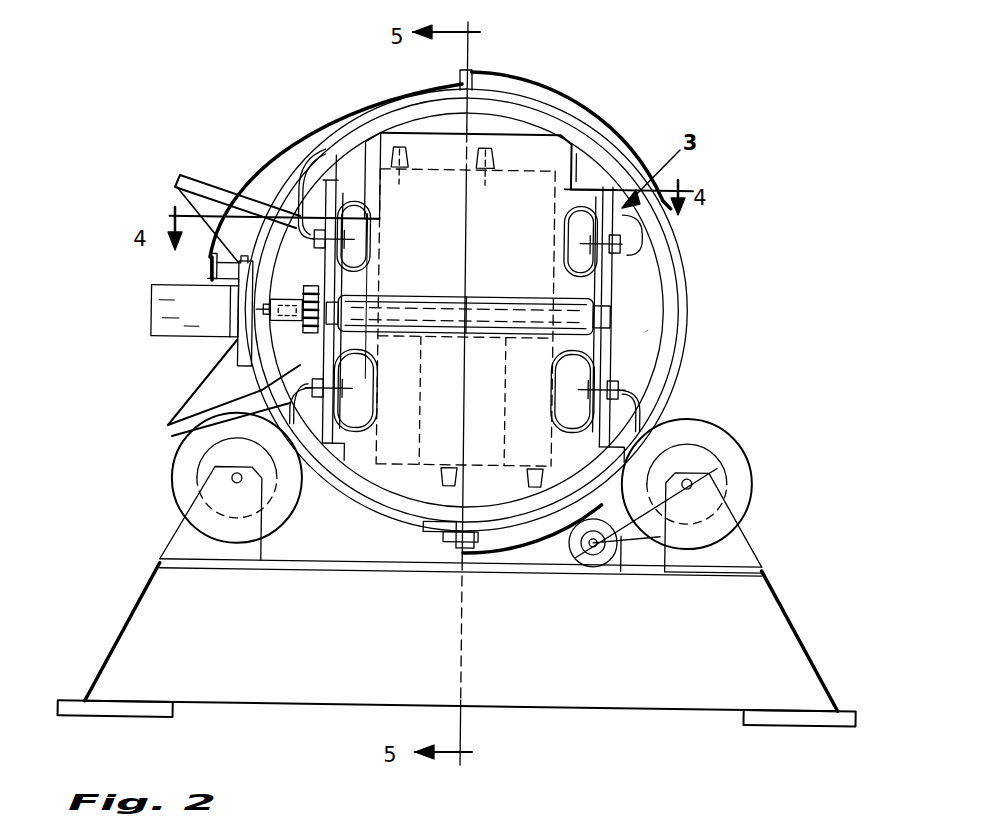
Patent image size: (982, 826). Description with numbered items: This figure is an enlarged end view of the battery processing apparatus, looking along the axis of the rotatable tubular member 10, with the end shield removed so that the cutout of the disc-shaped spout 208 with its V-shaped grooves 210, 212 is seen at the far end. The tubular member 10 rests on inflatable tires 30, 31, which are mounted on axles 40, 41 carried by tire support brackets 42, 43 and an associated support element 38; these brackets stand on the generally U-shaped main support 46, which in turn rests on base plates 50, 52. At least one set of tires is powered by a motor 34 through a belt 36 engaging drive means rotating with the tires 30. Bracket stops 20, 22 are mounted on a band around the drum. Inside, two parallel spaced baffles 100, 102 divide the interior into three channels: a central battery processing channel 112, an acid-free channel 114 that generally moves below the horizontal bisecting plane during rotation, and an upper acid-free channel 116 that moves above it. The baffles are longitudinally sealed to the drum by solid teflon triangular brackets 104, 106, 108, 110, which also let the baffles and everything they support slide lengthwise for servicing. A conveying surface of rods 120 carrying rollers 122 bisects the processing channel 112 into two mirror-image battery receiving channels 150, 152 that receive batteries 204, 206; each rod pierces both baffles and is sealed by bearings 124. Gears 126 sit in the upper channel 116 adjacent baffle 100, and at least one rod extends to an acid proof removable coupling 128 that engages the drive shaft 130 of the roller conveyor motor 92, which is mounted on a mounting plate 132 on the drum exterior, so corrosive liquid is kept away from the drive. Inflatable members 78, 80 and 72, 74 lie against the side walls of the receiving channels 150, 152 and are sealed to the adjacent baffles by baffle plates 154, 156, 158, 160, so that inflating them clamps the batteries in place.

The tubular member 10 is at (553, 112).
The bracket stop 20 is at (196, 186).
The bracket stop 22 is at (170, 427).
The inflatable tire 30 is at (745, 480).
The inflatable tire 31 is at (172, 473).
The motor 34 is at (570, 550).
The belt 36 is at (625, 548).
The wheel bracket 38 is at (722, 490).
The axle 40 is at (692, 483).
The axle 41 is at (232, 481).
The tire support bracket 42 is at (740, 557).
The tire support bracket 43 is at (193, 540).
The main support 46 is at (792, 645).
The base plate 50 is at (845, 712).
The base plate 52 is at (72, 712).
The upper inflatable member 72 is at (370, 242).
The upper inflatable member 74 is at (560, 237).
The lower inflatable member 78 is at (378, 408).
The lower inflatable member 80 is at (552, 407).
The roller conveyor motor 92 is at (170, 306).
The baffle 100 is at (327, 362).
The baffle 102 is at (608, 352).
The triangular bracket 104 is at (605, 178).
The triangular bracket 106 is at (612, 442).
The triangular bracket 108 is at (305, 500).
The triangular bracket 110 is at (333, 128).
The battery processing channel 112 is at (425, 508).
The acid-free channel 114 is at (645, 332).
The acid-free channel 116 is at (283, 368).
The rod 120 is at (398, 302).
The roller 122 is at (480, 300).
The bearing 124 is at (345, 285).
The gear 126 is at (310, 288).
The acid proof removable coupling 128 is at (290, 308).
The drive shaft 130 is at (262, 322).
The mounting plate 132 is at (210, 268).
The battery receiving channel 150 is at (446, 513).
The battery receiving channel 152 is at (425, 122).
The baffle plate 154 is at (370, 225).
The baffle plate 156 is at (375, 378).
The baffle plate 158 is at (575, 262).
The baffle plate 160 is at (553, 372).
The battery 204 is at (465, 304).
The battery 206 is at (467, 486).
The disc-shaped spout 208 is at (375, 150).
The V-shaped groove 210 is at (500, 130).
The V-shaped groove 212 is at (482, 510).